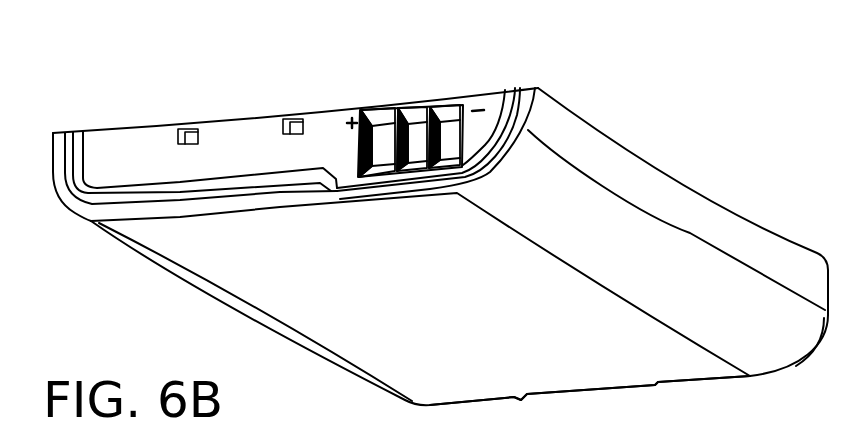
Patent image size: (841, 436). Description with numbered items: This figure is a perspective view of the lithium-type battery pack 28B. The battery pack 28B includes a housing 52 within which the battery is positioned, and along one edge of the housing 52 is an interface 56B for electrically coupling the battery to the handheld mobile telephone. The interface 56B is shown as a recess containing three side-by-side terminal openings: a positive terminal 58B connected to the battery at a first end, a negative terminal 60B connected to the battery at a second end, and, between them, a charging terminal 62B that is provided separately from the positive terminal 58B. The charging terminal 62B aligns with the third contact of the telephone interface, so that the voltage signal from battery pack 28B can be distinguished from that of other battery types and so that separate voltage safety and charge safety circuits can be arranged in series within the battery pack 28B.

The battery pack 28B is at (656, 155).
The interface 56B is at (350, 92).
The positive terminal 58B is at (388, 126).
The charging terminal 62B is at (416, 122).
The negative terminal 60B is at (452, 122).
The housing 52 is at (690, 372).